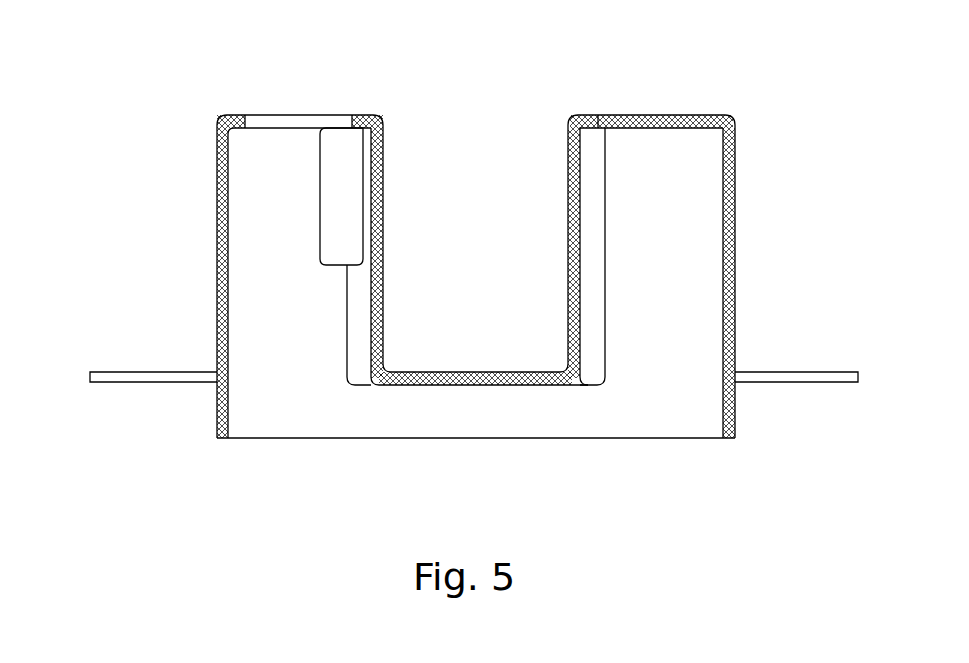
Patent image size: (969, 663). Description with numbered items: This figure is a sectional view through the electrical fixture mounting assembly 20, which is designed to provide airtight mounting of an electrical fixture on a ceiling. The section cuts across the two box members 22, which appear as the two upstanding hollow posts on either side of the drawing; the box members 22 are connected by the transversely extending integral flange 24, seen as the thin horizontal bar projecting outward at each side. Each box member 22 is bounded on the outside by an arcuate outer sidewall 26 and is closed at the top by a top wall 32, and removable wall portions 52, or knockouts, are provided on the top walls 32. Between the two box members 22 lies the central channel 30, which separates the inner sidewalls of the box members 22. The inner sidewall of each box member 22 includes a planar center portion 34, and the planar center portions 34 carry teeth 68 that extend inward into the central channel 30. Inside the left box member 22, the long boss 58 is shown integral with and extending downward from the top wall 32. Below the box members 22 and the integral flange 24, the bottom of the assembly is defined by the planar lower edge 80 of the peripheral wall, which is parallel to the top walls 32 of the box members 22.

The electrical fixture mounting assembly 20 is at (158, 136).
The box member 22 is at (735, 150).
The integral flange 24 is at (797, 372).
The arcuate outer sidewall 26 is at (215, 250).
The central channel 30 is at (458, 195).
The top wall 32 is at (245, 115).
The planar center portion 34 is at (385, 262).
The removable wall portion 52 is at (653, 122).
The long boss 58 is at (320, 197).
The teeth 68 is at (385, 158).
The planar lower edge 80 is at (628, 438).